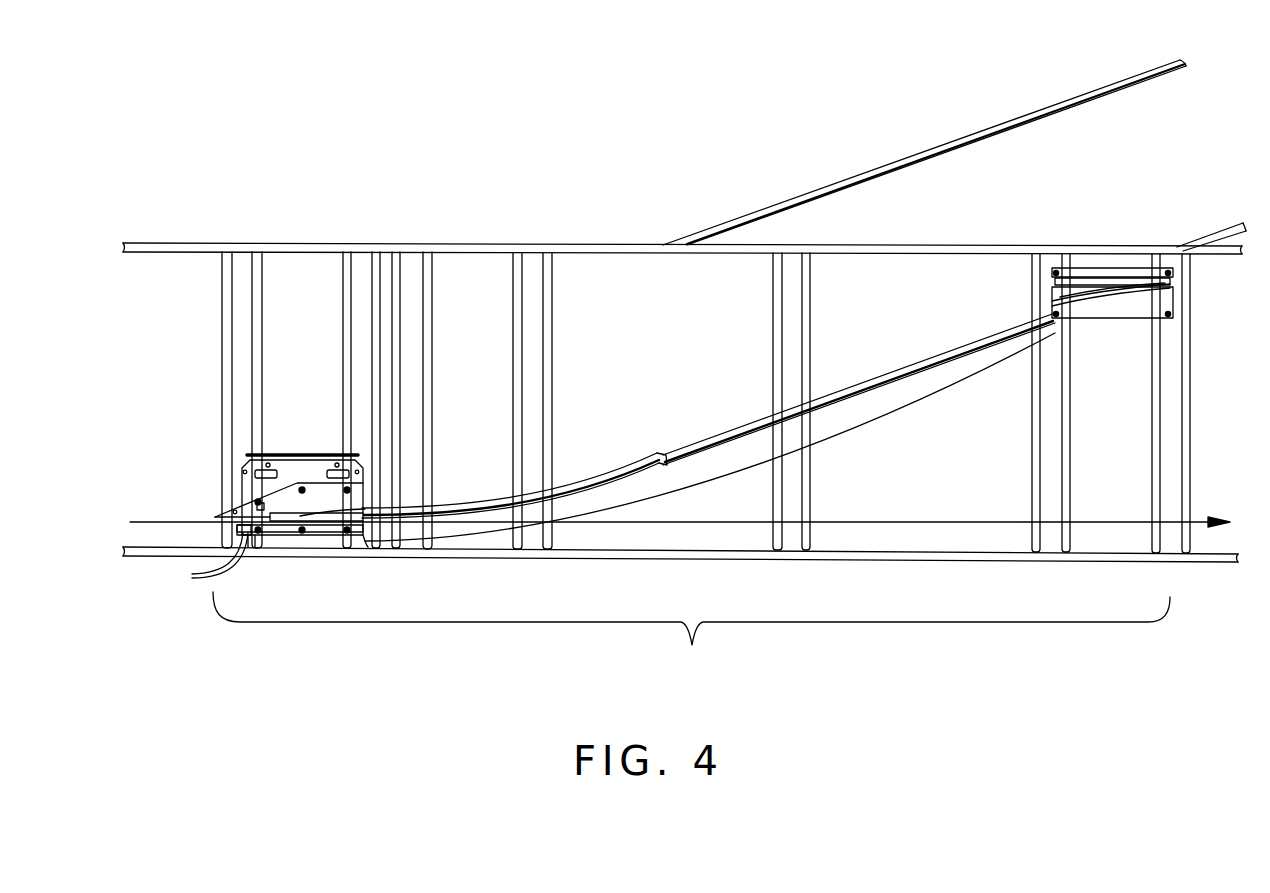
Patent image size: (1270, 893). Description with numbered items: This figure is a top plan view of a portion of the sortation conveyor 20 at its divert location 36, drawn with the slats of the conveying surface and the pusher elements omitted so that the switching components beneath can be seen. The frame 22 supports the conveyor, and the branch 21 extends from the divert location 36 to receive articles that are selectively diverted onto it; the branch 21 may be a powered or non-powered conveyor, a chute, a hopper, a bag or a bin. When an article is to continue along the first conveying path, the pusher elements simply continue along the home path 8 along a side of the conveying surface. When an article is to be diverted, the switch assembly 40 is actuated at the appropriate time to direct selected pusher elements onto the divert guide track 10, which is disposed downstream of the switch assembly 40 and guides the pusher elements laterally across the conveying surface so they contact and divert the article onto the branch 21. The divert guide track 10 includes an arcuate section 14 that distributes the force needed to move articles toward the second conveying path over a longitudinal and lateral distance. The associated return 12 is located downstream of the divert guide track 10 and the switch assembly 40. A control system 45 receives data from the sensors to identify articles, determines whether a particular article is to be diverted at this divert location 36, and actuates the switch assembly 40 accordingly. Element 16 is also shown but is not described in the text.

The home path 8 is at (1202, 518).
The divert guide track 10 is at (737, 465).
The return 12 is at (1090, 277).
The arcuate section 14 is at (563, 481).
The cable 16 is at (905, 363).
The sortation conveyor 20 is at (404, 170).
The branch 21 is at (958, 102).
The frame 22 is at (327, 243).
The divert location 36 is at (691, 635).
The switch assembly 40 is at (322, 538).
The control system 45 is at (186, 589).